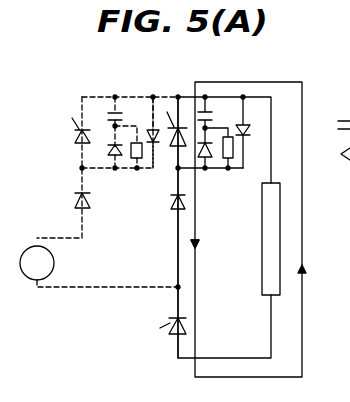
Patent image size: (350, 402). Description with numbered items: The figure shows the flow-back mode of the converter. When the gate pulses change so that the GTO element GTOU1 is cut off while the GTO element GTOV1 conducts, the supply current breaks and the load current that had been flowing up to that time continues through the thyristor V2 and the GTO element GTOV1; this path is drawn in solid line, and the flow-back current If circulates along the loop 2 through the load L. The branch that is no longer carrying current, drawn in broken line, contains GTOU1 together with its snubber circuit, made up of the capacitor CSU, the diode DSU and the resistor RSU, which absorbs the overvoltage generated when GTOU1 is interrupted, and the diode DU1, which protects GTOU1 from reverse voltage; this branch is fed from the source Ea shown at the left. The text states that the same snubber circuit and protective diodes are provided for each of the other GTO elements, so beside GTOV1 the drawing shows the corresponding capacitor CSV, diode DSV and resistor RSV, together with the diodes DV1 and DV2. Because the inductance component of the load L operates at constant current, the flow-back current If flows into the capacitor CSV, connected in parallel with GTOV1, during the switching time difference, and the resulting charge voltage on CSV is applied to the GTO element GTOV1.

The loop 2 is at (302, 218).
The GTO element GTOV1 is at (168, 147).
The diode DV1 is at (172, 210).
The thyristor V2 is at (161, 330).
The flow-back current If is at (195, 277).
The capacitor CSV is at (209, 112).
The snubber diode DSV is at (216, 166).
The snubber resistor RSV is at (235, 162).
The diode DV2 is at (247, 124).
The load L is at (281, 247).
The capacitor CSU is at (112, 113).
The diode DSU is at (150, 124).
The resistor RSU is at (133, 161).
The GTO element GTOU1 is at (76, 141).
The diode DU1 is at (76, 201).
The voltage source Ea is at (37, 263).